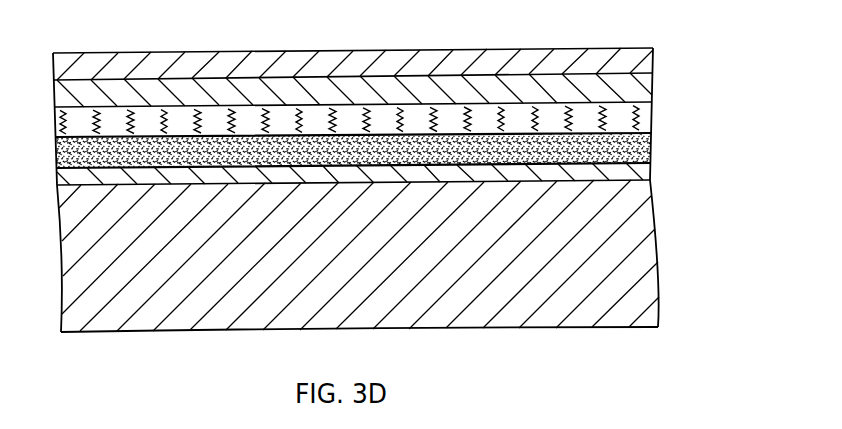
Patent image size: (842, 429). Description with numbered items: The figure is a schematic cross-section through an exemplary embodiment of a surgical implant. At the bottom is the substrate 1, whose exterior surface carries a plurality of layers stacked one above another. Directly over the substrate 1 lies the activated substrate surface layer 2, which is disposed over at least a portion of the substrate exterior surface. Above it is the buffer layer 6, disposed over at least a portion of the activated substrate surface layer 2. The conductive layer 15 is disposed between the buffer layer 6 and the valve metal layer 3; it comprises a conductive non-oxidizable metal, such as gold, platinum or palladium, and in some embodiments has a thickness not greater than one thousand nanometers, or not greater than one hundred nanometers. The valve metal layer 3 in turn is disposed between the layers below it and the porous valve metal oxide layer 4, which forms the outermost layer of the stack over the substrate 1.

The substrate 1 is at (642, 254).
The activated substrate surface layer 2 is at (640, 172).
The valve metal layer 3 is at (640, 88).
The porous valve metal oxide layer 4 is at (640, 57).
The buffer layer 6 is at (640, 142).
The conductive layer 15 is at (640, 117).